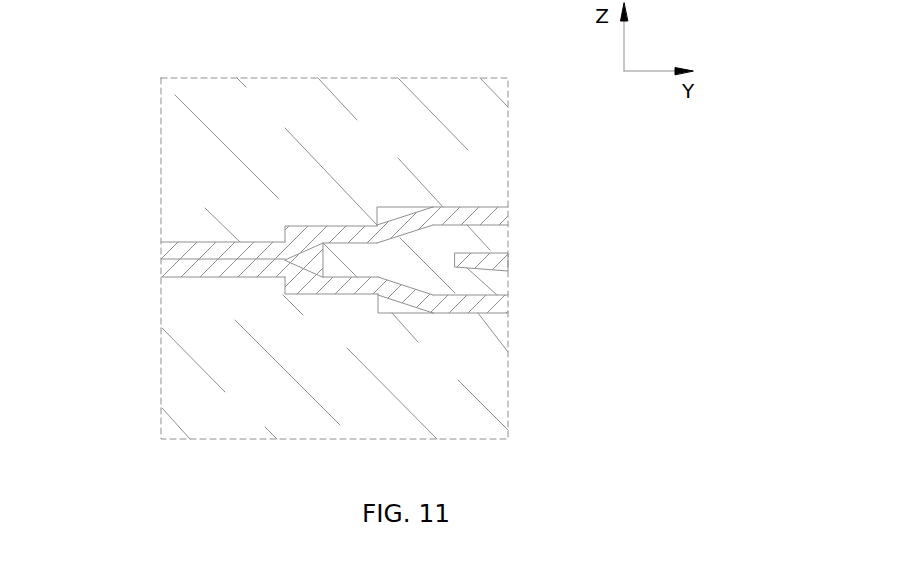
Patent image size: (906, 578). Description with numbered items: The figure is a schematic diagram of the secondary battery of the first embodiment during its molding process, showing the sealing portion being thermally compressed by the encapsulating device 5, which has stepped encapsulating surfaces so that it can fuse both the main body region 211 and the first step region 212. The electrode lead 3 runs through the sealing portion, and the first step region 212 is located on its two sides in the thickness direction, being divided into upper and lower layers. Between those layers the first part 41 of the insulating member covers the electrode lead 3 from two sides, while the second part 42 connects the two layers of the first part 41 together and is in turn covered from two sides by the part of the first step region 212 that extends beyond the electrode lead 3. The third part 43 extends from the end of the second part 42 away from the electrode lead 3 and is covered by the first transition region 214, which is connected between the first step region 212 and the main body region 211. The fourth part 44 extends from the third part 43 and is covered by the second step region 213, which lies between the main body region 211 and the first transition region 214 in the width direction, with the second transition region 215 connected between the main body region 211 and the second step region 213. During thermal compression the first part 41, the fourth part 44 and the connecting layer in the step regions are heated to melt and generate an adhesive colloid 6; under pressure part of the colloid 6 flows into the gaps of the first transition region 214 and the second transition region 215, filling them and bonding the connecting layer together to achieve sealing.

The electrode lead 3 is at (508, 262).
The encapsulating device 5 is at (208, 100).
The adhesive colloid 6 is at (314, 253).
The first part 41 is at (502, 282).
The second part 42 is at (447, 260).
The third part 43 is at (436, 278).
The fourth part 44 is at (338, 272).
The main body region 211 is at (180, 277).
The first step region 212 is at (508, 210).
The second step region 213 is at (350, 232).
The first transition region 214 is at (403, 220).
The second transition region 215 is at (305, 280).